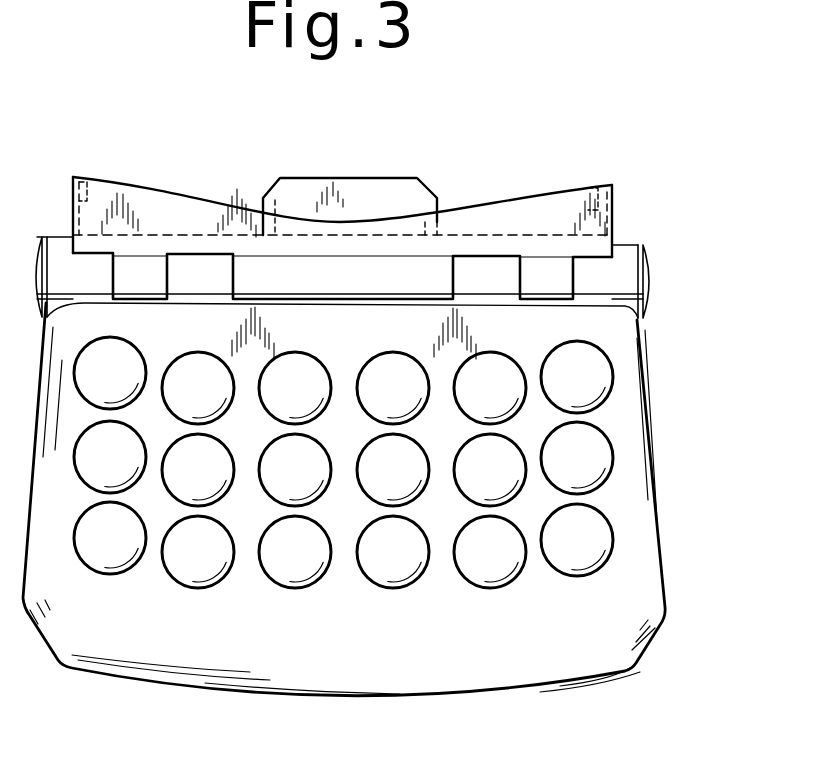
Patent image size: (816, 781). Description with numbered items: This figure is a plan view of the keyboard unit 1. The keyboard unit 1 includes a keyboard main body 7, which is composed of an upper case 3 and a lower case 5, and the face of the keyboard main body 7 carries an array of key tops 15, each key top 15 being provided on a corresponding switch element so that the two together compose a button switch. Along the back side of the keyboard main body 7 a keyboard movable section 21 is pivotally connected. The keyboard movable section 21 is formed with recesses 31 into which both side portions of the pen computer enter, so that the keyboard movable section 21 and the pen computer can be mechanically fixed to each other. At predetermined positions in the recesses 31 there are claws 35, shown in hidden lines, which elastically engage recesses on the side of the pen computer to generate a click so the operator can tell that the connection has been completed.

The keyboard unit 1 is at (695, 193).
The keyboard movable section 21 is at (612, 213).
The recesses 31 is at (154, 205).
The claws 35 is at (103, 180).
The keyboard main body 7 is at (636, 388).
The upper case 3 is at (650, 582).
The lower case 5 is at (344, 499).
The key top 15 is at (302, 571).